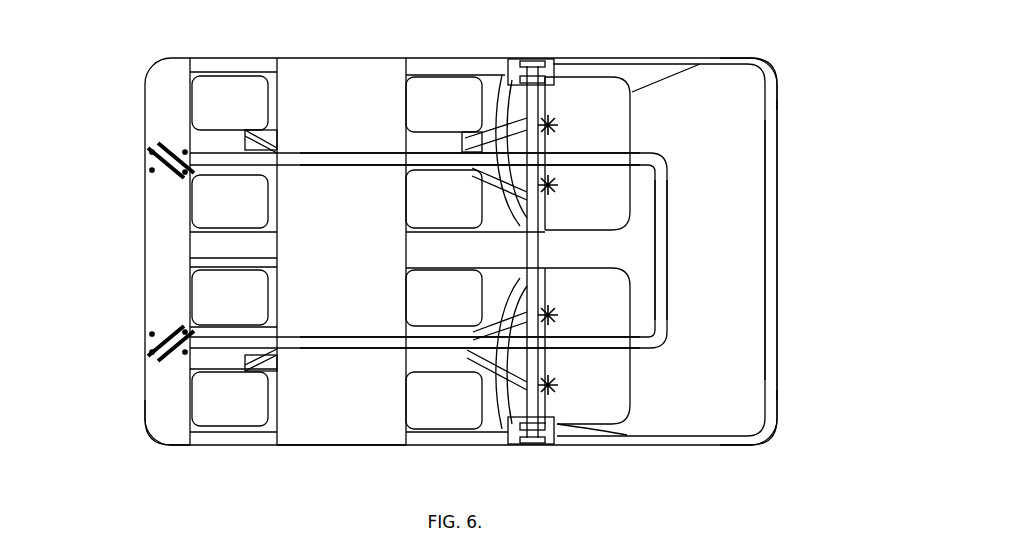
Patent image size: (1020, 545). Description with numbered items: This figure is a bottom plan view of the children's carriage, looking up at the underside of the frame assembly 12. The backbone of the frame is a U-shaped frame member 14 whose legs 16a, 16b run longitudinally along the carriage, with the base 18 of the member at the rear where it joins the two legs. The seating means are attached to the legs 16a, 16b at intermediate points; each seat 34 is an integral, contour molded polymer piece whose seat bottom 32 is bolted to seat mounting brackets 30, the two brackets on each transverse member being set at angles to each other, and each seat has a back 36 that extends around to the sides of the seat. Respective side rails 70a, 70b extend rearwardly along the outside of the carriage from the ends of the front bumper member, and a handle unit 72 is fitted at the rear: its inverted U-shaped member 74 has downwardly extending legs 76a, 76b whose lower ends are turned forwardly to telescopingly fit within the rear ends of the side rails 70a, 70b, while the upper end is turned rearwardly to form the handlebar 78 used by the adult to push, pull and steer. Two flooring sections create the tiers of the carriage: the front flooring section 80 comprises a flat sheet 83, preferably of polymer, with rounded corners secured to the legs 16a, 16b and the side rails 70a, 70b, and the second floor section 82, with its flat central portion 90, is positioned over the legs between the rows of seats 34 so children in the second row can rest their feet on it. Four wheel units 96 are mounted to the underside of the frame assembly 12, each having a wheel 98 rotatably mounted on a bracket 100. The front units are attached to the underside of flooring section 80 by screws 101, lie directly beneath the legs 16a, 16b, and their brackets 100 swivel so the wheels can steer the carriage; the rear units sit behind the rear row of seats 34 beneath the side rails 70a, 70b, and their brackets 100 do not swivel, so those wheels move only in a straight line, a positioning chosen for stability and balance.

The frame assembly 12 is at (720, 138).
The U-shaped frame member 14 is at (688, 250).
The leg 16a is at (667, 160).
The leg 16b is at (655, 335).
The base 18 is at (668, 275).
The seat mounting bracket 30 is at (272, 133).
The seat bottom 32 is at (490, 85).
The seat 34 is at (617, 75).
The seat back 36 is at (716, 60).
The side rail 70a is at (414, 60).
The side rail 70b is at (418, 446).
The handle unit 72 is at (820, 155).
The inverted U-shaped member 74 is at (762, 164).
The leg 76a is at (745, 58).
The leg 76b is at (730, 448).
The handlebar 78 is at (777, 134).
The flooring section 80 is at (144, 241).
The floor section 82 is at (275, 247).
The flat sheet 83 is at (182, 420).
The flat central portion 90 is at (322, 446).
The wheel unit 96 is at (118, 130).
The wheel 98 is at (152, 147).
The bracket 100 is at (176, 145).
The screw 101 is at (150, 170).